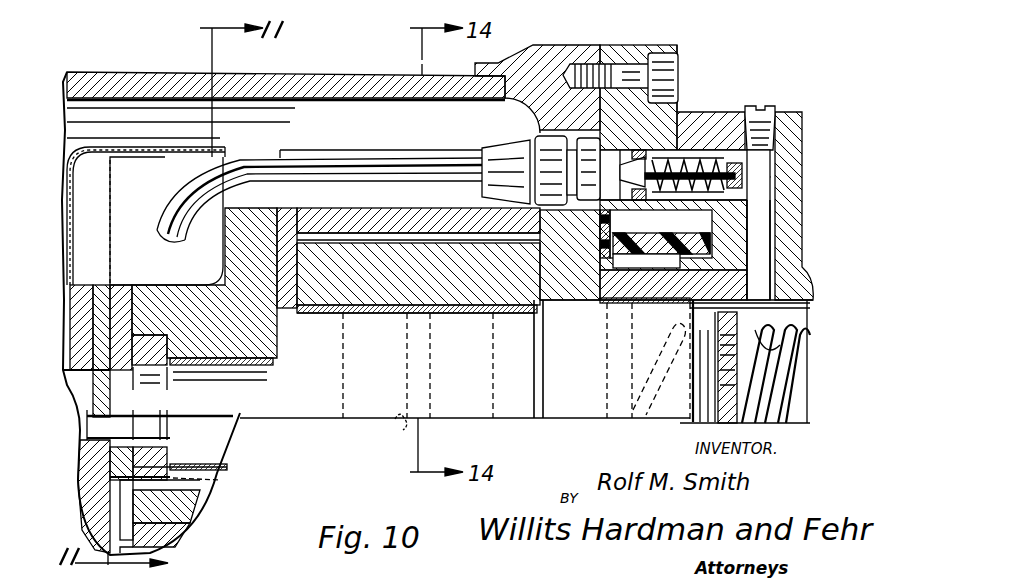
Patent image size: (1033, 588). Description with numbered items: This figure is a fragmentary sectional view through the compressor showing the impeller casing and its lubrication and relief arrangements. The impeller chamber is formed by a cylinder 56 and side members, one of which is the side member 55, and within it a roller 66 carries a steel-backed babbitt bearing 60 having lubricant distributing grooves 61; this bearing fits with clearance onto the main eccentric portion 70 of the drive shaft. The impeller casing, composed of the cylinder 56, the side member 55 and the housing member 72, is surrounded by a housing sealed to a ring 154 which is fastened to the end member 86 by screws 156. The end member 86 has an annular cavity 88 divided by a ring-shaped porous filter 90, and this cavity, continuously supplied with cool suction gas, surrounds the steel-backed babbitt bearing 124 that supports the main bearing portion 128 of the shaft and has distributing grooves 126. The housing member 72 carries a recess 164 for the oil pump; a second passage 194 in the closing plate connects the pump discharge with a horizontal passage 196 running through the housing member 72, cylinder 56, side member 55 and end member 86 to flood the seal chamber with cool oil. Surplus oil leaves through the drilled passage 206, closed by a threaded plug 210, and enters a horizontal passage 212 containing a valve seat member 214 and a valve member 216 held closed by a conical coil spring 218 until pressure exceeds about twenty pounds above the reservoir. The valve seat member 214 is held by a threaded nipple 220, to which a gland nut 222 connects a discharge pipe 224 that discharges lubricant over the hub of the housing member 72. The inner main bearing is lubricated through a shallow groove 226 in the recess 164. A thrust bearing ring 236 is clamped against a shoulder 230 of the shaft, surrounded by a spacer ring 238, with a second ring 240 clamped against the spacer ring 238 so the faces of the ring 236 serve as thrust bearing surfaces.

The ring 154 is at (560, 50).
The end member 86 is at (640, 52).
The screws 156 is at (679, 50).
The valve seat member 214 is at (652, 157).
The horizontal passage 212 is at (735, 163).
The valve member 216 is at (640, 162).
The conical coil spring 218 is at (700, 152).
The threaded plug 210 is at (768, 108).
The drilled passage 206 is at (765, 153).
The threaded nipple 220 is at (540, 140).
The gland nut 222 is at (507, 152).
The discharge pipe 224 is at (350, 162).
The cylinder 56 is at (378, 215).
The housing member 72 is at (234, 236).
The second ring 240 is at (80, 283).
The spacer ring 238 is at (104, 283).
The steel-backed babbitt bearing 60 is at (391, 313).
The roller 66 is at (473, 305).
The side member 55 is at (567, 287).
The steel-backed babbitt bearing 124 is at (602, 307).
The annular cavity 88 is at (617, 234).
The ring-shaped porous filter 90 is at (667, 238).
The main eccentric portion 70 is at (350, 414).
The lubricant distributing grooves 61 is at (402, 432).
The distributing grooves 126 is at (613, 420).
The main bearing portion 128 is at (675, 418).
The thrust bearing ring 236 is at (97, 392).
The shoulder 230 is at (88, 437).
The shallow groove 226 is at (220, 483).
The recess 164 is at (157, 488).
The horizontal passage 196 is at (190, 527).
The second passage 194 is at (123, 505).